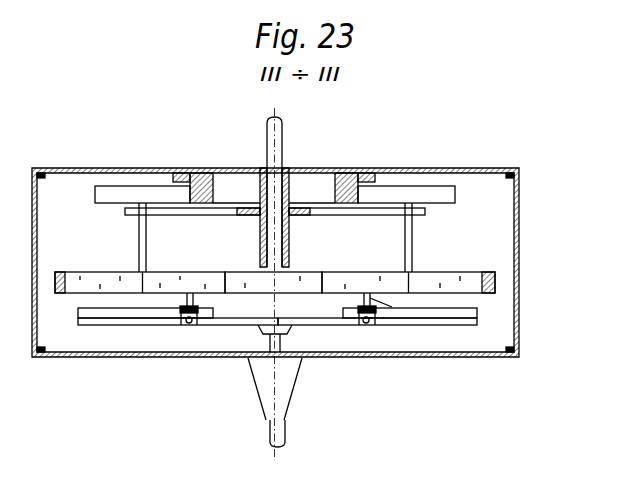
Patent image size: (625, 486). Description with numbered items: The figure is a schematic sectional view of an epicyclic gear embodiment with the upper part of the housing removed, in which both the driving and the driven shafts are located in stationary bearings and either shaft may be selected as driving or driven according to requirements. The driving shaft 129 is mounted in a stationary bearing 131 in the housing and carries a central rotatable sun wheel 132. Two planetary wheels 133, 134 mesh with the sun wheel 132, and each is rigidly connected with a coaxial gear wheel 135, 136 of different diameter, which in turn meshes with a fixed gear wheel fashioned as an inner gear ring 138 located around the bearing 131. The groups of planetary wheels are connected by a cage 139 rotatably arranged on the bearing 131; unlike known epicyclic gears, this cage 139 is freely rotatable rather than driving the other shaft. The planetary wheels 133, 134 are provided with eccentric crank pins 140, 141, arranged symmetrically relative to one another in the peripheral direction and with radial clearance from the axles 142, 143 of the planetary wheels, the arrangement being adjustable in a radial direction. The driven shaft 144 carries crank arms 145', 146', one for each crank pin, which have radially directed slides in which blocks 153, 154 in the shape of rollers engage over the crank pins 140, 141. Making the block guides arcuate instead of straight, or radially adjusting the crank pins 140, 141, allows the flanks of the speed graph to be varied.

The driving shaft 129 is at (277, 146).
The bearing 131 is at (289, 188).
The sun wheel 132 is at (298, 287).
The planetary wheel 133 is at (75, 291).
The planetary wheel 134 is at (519, 357).
The coaxial gear wheel 135 is at (124, 192).
The coaxial gear wheel 136 is at (422, 193).
The inner gear ring 138 is at (200, 182).
The cage 139 is at (232, 212).
The crank pin 140 is at (187, 303).
The crank pin 141 is at (392, 307).
The axle 142 is at (142, 235).
The axle 143 is at (412, 230).
The driven shaft 144 is at (273, 432).
The crank arm 145' is at (178, 370).
The crank arm 146' is at (402, 370).
The block 153 is at (187, 318).
The block 154 is at (365, 317).